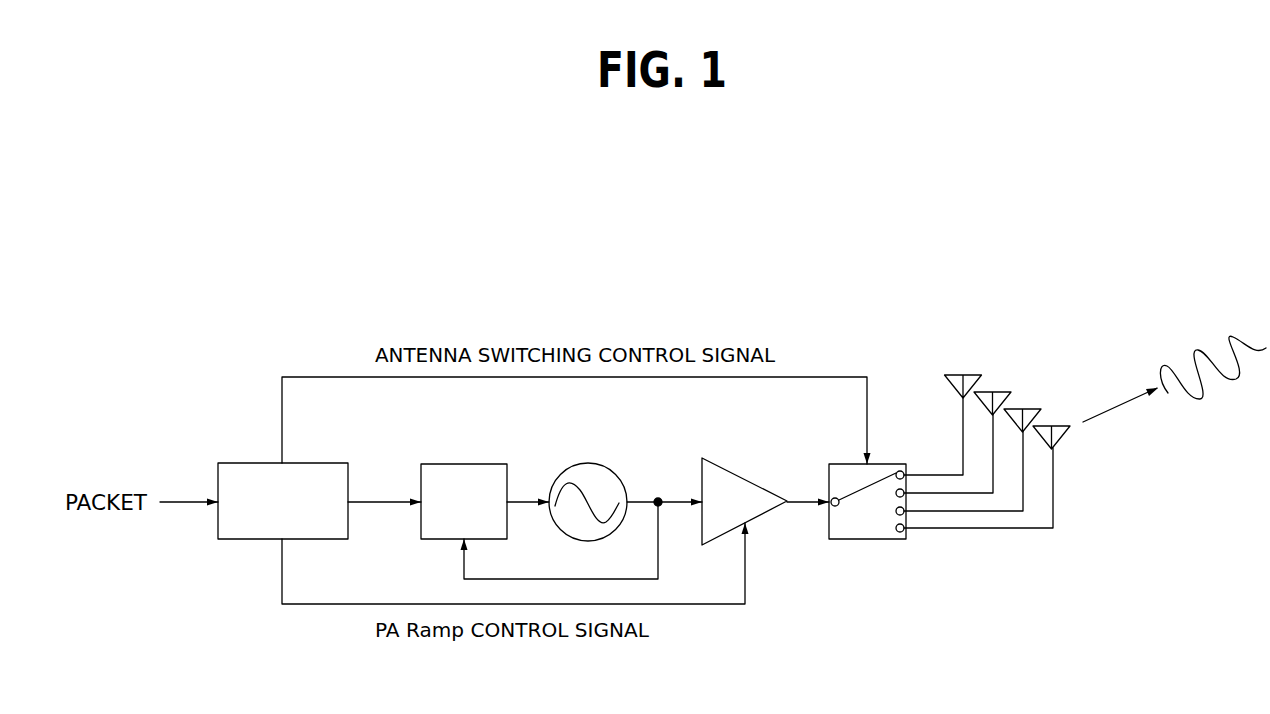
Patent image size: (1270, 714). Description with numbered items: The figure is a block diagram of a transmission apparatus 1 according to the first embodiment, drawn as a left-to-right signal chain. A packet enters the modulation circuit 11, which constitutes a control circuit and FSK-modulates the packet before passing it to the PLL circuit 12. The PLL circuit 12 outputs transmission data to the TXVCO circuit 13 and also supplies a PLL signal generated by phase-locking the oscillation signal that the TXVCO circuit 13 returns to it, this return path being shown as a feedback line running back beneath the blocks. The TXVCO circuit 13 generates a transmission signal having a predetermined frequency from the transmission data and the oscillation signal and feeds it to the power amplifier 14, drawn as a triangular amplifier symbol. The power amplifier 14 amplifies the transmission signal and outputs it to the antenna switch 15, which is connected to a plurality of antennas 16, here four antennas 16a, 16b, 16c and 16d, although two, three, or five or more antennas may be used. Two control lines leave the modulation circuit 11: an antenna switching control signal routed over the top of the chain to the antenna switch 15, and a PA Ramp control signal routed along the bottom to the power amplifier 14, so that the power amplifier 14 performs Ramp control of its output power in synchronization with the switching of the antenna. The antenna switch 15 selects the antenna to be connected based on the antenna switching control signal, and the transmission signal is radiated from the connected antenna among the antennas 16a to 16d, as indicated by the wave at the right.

The transmission apparatus 1 is at (915, 235).
The modulation circuit 11 is at (318, 463).
The PLL circuit 12 is at (464, 464).
The TXVCO circuit 13 is at (588, 463).
The power amplifier 14 is at (748, 484).
The antenna switch 15 is at (893, 464).
The antennas 16 is at (962, 252).
The antenna 16a is at (963, 374).
The antenna 16b is at (992, 391).
The antenna 16c is at (1022, 408).
The antenna 16d is at (1052, 425).